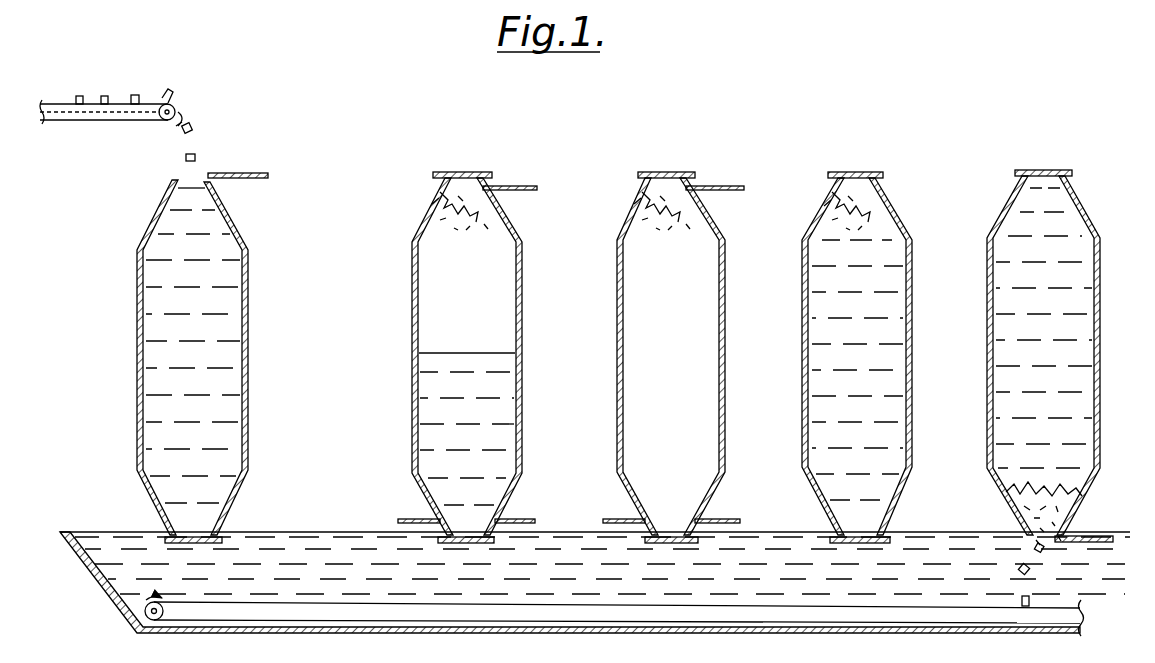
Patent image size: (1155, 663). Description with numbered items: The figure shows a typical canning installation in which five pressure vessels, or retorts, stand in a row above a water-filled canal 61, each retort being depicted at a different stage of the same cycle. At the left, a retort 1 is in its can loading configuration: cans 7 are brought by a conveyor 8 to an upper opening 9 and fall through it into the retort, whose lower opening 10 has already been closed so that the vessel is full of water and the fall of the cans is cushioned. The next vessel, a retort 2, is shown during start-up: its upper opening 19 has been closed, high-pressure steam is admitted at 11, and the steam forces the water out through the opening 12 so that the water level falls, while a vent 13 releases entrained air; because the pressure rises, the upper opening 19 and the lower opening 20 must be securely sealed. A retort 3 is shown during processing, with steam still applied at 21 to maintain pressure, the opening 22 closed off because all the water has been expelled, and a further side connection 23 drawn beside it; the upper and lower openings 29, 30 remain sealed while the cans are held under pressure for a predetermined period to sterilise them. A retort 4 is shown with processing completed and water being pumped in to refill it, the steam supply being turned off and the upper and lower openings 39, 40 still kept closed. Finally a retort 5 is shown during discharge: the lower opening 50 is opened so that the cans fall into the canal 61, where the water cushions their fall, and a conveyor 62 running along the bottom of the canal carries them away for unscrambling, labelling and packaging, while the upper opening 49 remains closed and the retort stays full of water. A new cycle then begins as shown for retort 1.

The retort 1 is at (128, 346).
The retort 2 is at (407, 351).
The retort 3 is at (608, 350).
The retort 4 is at (800, 348).
The retort 5 is at (985, 346).
The cans 7 is at (139, 104).
The conveyor 8 is at (118, 108).
The upper opening 9 is at (233, 175).
The lower opening 10 is at (190, 545).
The steam admission 11 is at (548, 188).
The opening 12 is at (528, 519).
The vent 13 is at (411, 519).
The upper opening 19 is at (490, 172).
The lower opening 20 is at (469, 544).
The steam supply 21 is at (780, 188).
The opening 22 is at (722, 519).
The outlet pipe of third tank 23 is at (615, 515).
The upper opening 29 is at (668, 172).
The lower opening 30 is at (669, 545).
The upper opening 39 is at (868, 172).
The lower opening 40 is at (844, 545).
The upper opening 49 is at (1050, 170).
The lower opening 50 is at (1089, 544).
The canal 61 is at (910, 565).
The conveyor 62 is at (760, 607).